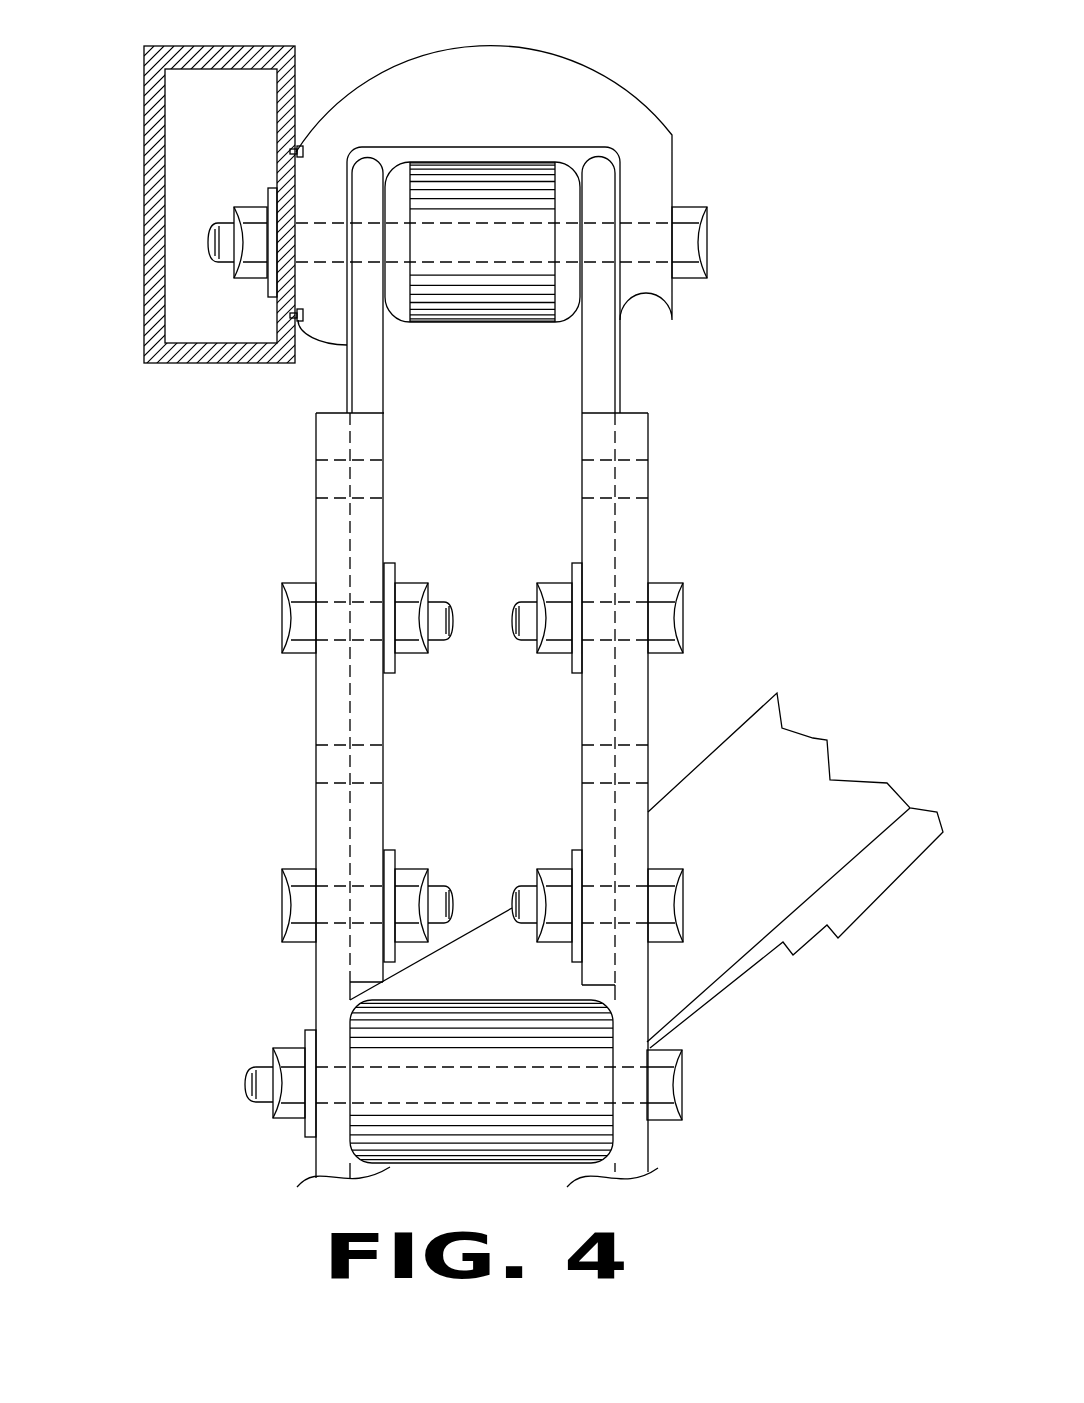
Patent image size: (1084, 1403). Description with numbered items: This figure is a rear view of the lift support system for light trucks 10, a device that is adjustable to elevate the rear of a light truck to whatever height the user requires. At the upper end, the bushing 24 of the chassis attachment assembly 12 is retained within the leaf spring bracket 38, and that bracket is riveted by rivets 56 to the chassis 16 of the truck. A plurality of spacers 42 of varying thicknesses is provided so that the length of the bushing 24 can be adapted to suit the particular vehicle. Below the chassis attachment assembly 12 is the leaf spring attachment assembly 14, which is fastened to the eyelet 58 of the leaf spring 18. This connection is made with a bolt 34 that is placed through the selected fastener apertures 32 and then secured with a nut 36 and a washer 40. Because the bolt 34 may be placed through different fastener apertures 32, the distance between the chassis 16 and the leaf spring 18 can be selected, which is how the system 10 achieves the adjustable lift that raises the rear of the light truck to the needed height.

The lift support system for light trucks 10 is at (758, 128).
The chassis attachment assembly 12 is at (616, 378).
The leaf spring attachment assembly 14 is at (316, 700).
The chassis 16 is at (144, 238).
The leaf spring 18 is at (813, 738).
The bushing 24 is at (488, 185).
The fastener apertures 32 is at (335, 885).
The bolt 34 is at (248, 278).
The nut 36 is at (552, 585).
The leaf spring bracket 38 is at (587, 73).
The washer 40 is at (545, 853).
The spacers 42 is at (570, 318).
The rivets 56 is at (304, 146).
The eyelet 58 is at (535, 1165).